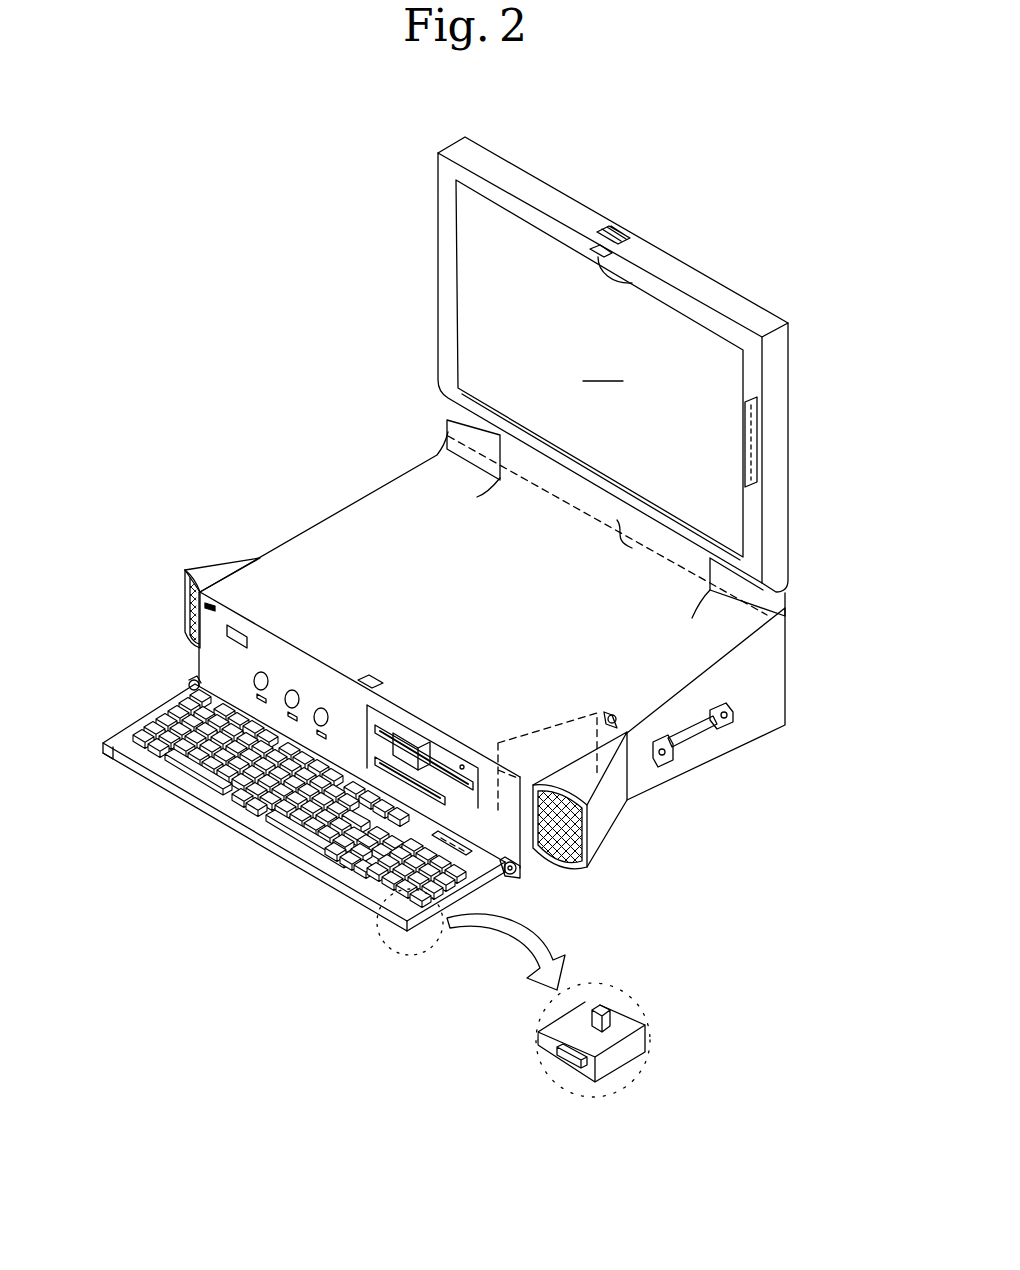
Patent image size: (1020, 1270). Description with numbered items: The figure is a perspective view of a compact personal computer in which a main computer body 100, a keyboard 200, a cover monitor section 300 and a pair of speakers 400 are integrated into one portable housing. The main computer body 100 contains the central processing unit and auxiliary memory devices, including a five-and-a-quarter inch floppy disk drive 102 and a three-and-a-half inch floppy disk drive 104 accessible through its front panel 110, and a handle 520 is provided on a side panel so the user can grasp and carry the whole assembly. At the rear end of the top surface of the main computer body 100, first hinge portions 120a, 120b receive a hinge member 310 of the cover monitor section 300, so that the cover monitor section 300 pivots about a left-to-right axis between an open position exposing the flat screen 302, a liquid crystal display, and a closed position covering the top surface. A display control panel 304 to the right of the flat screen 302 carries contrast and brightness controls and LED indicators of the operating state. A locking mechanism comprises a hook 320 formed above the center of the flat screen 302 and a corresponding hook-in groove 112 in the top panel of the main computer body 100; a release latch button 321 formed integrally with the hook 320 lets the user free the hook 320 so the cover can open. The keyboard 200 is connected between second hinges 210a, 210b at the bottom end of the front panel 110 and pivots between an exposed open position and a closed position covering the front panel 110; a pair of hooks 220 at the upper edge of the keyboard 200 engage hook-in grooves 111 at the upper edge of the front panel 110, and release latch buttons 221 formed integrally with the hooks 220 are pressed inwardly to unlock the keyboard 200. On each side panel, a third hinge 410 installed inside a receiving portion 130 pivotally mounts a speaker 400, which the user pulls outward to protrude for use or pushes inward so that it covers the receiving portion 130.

The main computer body 100 is at (315, 501).
The 5.25" floppy disk drive 102 is at (448, 760).
The 3.5" floppy disk drive 104 is at (437, 810).
The front panel 110 is at (208, 647).
The hook-in grooves 111 is at (183, 613).
The hook-in groove 112 is at (368, 675).
The first hinge portion 120a is at (788, 610).
The first hinge portion 120b is at (455, 420).
The receiving portion 130 is at (537, 713).
The keyboard 200 is at (168, 800).
The second hinge 210a is at (520, 870).
The second hinge 210b is at (188, 686).
The hook 220 is at (612, 1022).
The release latch button 221 is at (553, 1050).
The cover monitor section 300 is at (418, 287).
The flat screen 302 is at (605, 368).
The display control panel 304 is at (758, 406).
The hinge member 310 is at (588, 512).
The hook 320 is at (622, 283).
The release latch button 321 is at (615, 228).
The speakers 400 is at (188, 562).
The third hinge 410 is at (610, 715).
The handle 520 is at (705, 738).